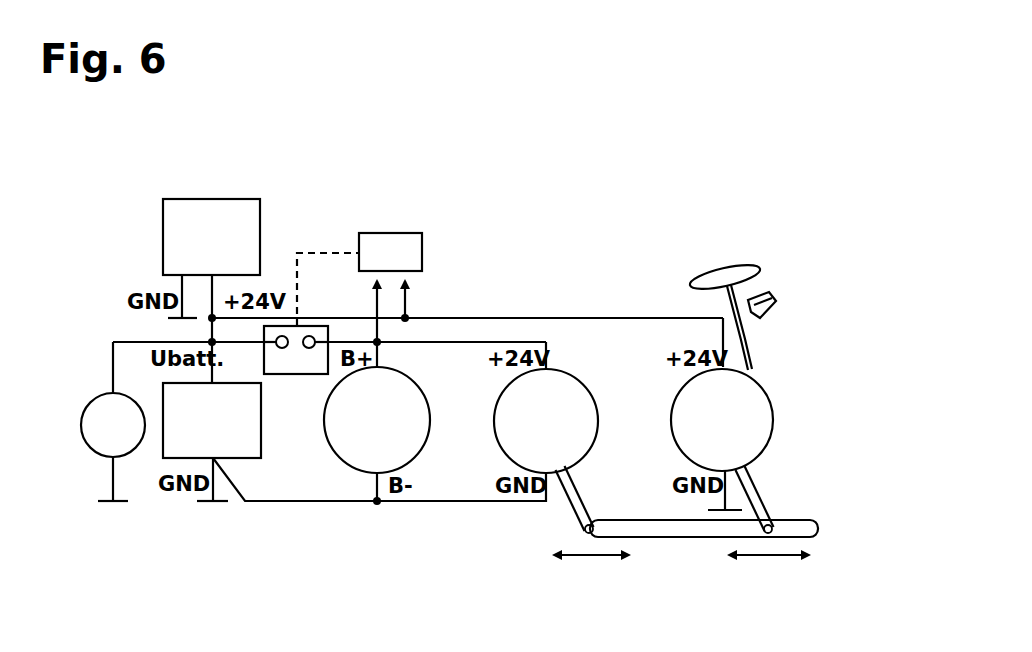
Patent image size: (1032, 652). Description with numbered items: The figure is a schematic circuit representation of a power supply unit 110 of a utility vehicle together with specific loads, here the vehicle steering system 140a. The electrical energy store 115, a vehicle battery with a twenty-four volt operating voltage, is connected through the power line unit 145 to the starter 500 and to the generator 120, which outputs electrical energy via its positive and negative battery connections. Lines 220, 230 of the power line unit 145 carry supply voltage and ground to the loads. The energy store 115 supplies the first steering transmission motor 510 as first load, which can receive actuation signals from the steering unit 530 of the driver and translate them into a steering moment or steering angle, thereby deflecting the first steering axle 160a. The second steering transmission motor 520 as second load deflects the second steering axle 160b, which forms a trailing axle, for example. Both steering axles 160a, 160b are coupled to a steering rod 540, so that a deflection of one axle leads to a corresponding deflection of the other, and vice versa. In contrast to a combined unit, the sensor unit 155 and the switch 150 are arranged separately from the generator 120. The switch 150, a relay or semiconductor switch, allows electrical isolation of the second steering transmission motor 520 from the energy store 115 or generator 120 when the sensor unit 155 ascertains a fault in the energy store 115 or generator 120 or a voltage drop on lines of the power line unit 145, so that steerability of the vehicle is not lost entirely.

The power supply unit 110 is at (316, 215).
The electrical energy store 115 is at (163, 450).
The generator 120 is at (347, 466).
The vehicle steering system 140a is at (670, 384).
The power line unit 145 is at (213, 197).
The switch 150 is at (297, 375).
The sensor unit 155 is at (387, 233).
The first steering axle 160a is at (773, 500).
The second steering axle 160b is at (585, 528).
The supply line 220 is at (511, 318).
The supply line 230 is at (460, 342).
The starter 500 is at (86, 400).
The first steering transmission motor 510 is at (780, 382).
The second steering transmission motor 520 is at (566, 372).
The steering unit 530 is at (765, 274).
The steering rod 540 is at (820, 530).